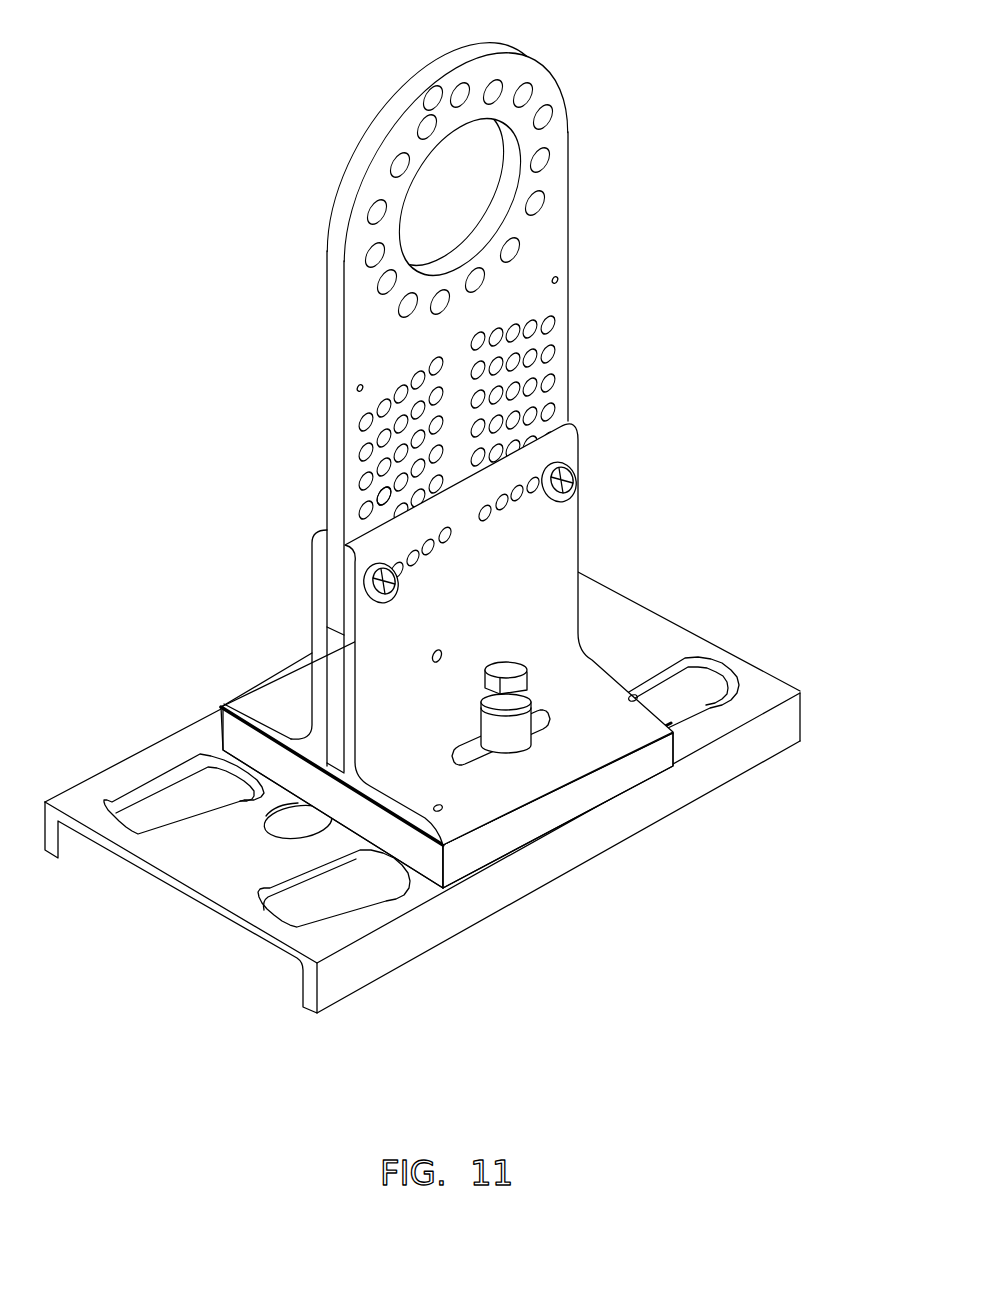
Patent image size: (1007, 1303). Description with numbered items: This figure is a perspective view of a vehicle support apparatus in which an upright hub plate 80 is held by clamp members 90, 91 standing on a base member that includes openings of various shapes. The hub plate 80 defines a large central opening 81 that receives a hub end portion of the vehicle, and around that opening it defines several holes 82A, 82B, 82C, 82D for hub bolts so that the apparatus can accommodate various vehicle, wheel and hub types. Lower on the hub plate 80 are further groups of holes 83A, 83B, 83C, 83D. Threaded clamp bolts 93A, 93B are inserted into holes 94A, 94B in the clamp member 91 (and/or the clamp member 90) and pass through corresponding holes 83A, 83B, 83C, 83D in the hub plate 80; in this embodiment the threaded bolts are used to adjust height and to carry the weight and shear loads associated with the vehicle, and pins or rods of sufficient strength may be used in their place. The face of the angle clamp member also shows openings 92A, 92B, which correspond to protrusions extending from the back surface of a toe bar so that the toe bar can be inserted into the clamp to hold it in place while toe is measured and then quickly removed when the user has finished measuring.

The hub plate 80 is at (577, 201).
The opening 81 is at (466, 203).
The opening 82A is at (467, 80).
The opening 82B is at (553, 104).
The opening 82C is at (387, 159).
The opening 82D is at (392, 302).
The opening 83A is at (361, 414).
The opening 83B is at (379, 498).
The opening 83C is at (548, 343).
The opening 83D is at (556, 411).
The clamp member 90 is at (238, 706).
The clamp member 91 is at (589, 447).
The opening 92A is at (446, 813).
The opening 92B is at (640, 704).
The threaded clamp bolt 93A is at (369, 577).
The threaded clamp bolt 93B is at (570, 498).
The opening 94A is at (460, 541).
The opening 94B is at (494, 517).